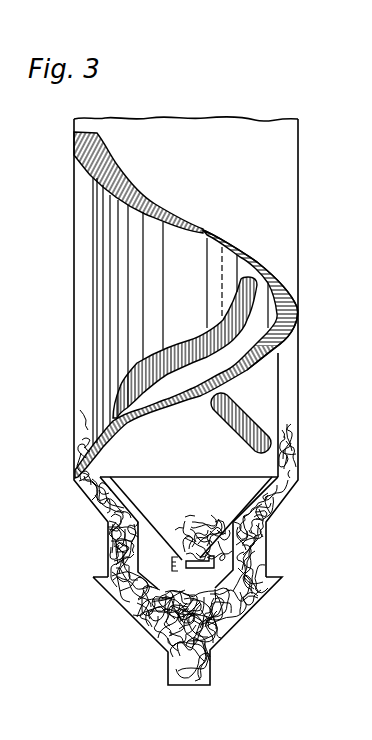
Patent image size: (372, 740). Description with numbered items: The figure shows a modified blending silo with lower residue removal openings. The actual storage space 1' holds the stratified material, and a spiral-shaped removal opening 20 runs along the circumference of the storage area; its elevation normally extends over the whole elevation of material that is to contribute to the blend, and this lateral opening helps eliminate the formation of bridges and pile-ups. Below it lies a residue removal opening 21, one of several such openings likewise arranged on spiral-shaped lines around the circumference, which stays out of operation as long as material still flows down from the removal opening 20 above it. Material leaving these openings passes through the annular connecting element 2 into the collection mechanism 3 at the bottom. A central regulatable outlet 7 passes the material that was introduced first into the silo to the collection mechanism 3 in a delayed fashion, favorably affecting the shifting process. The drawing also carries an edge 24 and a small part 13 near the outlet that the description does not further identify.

The storage space 1' is at (204, 353).
The removal opening 20 is at (257, 270).
The blade edge 24 is at (286, 286).
The residue removal opening 21 is at (184, 361).
The connecting element 2 is at (82, 388).
The central regulatable outlet 7 is at (210, 537).
The bracket 13 is at (213, 566).
The collection mechanism 3 is at (158, 642).